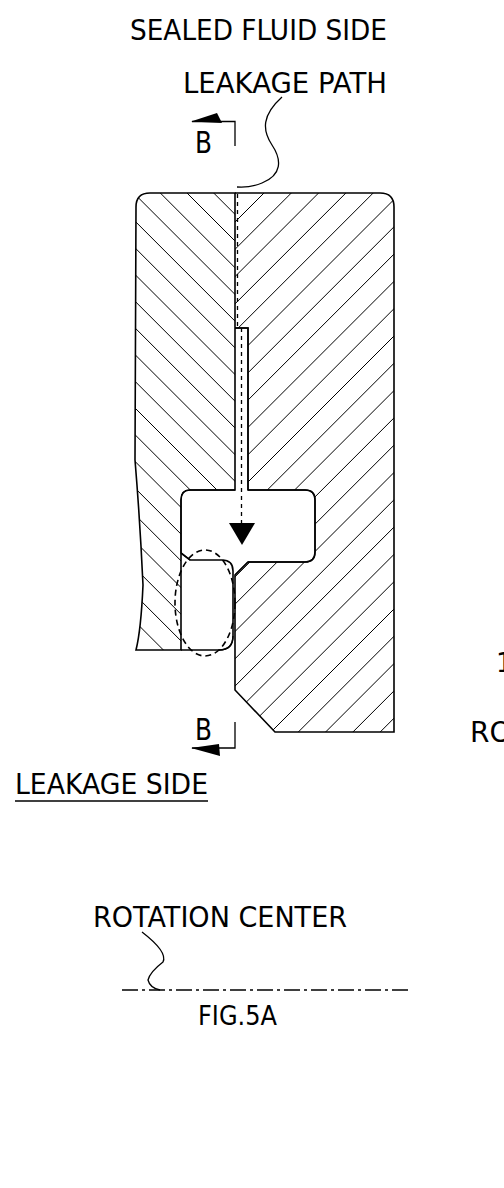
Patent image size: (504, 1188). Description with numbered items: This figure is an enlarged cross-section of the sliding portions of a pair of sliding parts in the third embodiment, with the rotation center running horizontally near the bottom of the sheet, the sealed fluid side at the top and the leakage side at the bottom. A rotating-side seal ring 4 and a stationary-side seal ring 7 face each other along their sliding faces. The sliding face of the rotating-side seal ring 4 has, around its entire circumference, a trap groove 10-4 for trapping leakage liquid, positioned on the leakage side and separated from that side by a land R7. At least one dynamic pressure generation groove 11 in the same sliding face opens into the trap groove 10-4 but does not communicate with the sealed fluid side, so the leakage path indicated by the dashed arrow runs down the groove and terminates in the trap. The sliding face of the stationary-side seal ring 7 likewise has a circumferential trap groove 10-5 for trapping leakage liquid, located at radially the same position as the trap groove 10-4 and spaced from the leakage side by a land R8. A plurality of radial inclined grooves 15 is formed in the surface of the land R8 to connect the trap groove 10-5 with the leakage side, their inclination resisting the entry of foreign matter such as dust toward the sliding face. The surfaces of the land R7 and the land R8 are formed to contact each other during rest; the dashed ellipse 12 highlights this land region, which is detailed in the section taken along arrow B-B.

The stationary-side seal ring 7 is at (144, 197).
The rotating-side seal ring 4 is at (370, 195).
The dynamic pressure generation groove 11 is at (250, 372).
The trap groove 10-4 is at (300, 533).
The trap groove 10-5 is at (205, 523).
The lip region (dashed ellipse) 12 is at (150, 591).
The radial inclined grooves 15 is at (198, 607).
The land R7 is at (234, 637).
The land R8 is at (240, 607).